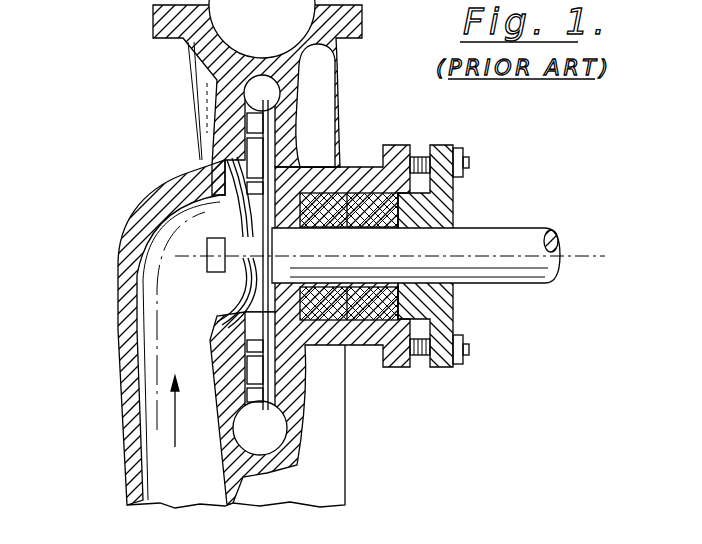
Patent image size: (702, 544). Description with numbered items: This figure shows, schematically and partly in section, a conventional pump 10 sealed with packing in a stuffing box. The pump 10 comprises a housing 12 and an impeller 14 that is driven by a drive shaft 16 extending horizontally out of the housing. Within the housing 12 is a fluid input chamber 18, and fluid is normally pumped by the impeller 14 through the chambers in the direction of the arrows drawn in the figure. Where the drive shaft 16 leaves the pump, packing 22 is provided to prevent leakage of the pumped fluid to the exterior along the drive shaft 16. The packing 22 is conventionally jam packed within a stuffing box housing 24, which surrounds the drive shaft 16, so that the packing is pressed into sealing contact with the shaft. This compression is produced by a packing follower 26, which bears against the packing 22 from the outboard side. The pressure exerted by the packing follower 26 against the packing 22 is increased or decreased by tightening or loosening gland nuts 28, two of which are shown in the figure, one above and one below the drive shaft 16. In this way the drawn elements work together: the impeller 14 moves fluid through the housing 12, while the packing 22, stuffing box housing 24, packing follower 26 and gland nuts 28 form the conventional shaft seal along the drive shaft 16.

The pump 10 is at (110, 158).
The housing 12 is at (125, 433).
The impeller 14 is at (245, 183).
The drive shaft 16 is at (535, 228).
The fluid input chamber 18 is at (160, 374).
The packing 22 is at (378, 190).
The stuffing box housing 24 is at (332, 130).
The packing follower 26 is at (447, 198).
The gland nuts 28 is at (458, 150).